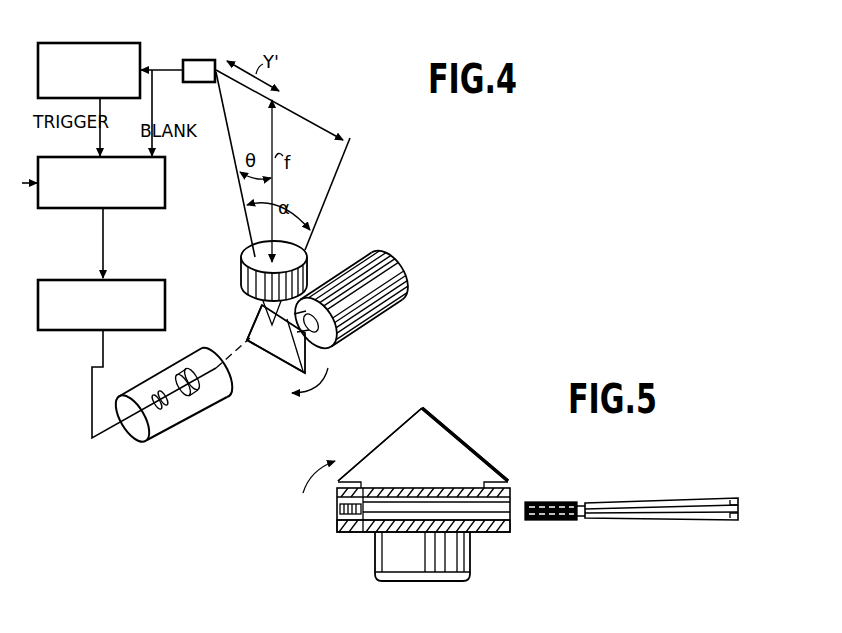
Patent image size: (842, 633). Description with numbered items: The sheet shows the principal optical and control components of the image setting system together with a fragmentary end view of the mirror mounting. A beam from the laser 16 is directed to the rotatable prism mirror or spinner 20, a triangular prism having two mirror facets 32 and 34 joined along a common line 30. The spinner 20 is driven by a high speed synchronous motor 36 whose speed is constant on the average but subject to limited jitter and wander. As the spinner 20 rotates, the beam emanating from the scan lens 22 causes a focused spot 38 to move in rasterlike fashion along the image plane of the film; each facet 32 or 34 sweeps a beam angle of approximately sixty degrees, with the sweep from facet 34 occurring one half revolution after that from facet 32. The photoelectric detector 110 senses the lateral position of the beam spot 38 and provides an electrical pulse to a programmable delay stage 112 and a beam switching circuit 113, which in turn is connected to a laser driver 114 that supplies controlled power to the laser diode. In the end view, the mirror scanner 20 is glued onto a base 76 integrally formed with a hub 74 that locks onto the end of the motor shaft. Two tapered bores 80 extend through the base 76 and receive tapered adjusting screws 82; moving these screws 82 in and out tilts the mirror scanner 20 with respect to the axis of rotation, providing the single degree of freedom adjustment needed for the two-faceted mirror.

In FIG. 4, the laser 16 is at (167, 435).
In FIG. 5, the rotatable prism mirror 20 is at (392, 496).
In FIG. 4, the scan lens 22 is at (310, 262).
In FIG. 4, the common line 30 is at (277, 360).
In FIG. 5, the common line 30 is at (424, 408).
In FIG. 4, the mirror facet 32 is at (255, 331).
In FIG. 5, the mirror facet 32 is at (478, 452).
In FIG. 4, the mirror facet 34 is at (292, 372).
In FIG. 5, the mirror facet 34 is at (378, 446).
In FIG. 4, the high speed synchronous motor 36 is at (390, 314).
In FIG. 4, the focused spot 38 is at (326, 129).
In FIG. 5, the hub 74 is at (403, 558).
In FIG. 5, the base 76 is at (340, 531).
In FIG. 5, the tapered bores 80 is at (512, 524).
In FIG. 5, the adjusting screws 82 is at (610, 503).
In FIG. 4, the photoelectric detector 110 is at (200, 61).
In FIG. 4, the programmable delay stage 112 is at (125, 57).
In FIG. 4, the beam switching circuit 113 is at (88, 210).
In FIG. 4, the laser driver 114 is at (138, 288).